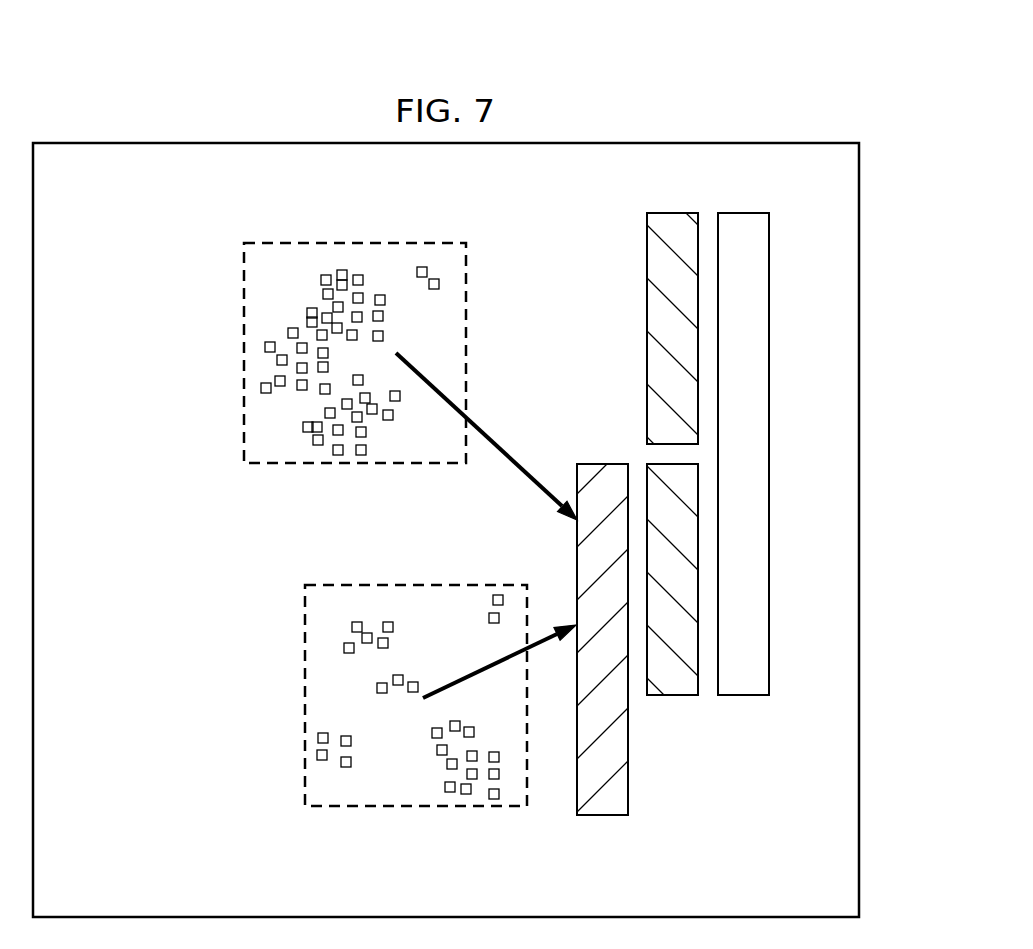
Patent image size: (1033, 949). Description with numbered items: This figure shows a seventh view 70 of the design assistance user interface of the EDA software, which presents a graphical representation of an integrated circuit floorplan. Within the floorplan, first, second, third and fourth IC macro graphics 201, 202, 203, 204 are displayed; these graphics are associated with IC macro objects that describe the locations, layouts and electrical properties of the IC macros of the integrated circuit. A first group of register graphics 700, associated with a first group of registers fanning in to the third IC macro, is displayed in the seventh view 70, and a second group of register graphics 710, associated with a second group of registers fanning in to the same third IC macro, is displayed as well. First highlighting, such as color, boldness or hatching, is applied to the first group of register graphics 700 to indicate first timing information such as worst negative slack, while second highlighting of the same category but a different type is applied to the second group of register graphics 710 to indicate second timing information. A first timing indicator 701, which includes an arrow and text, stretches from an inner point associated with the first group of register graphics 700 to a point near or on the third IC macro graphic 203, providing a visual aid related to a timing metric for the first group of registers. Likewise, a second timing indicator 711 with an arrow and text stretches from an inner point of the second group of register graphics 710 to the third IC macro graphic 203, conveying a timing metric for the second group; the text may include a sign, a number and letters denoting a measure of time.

The seventh view 70 is at (624, 52).
The first group of register graphics 700 is at (233, 287).
The first timing indicator 701 is at (505, 451).
The second group of register graphics 710 is at (294, 738).
The second timing indicator 711 is at (472, 673).
The first IC macro graphic 201 is at (673, 213).
The second IC macro graphic 202 is at (672, 695).
The third IC macro graphic 203 is at (602, 815).
The fourth IC macro graphic 204 is at (742, 213).